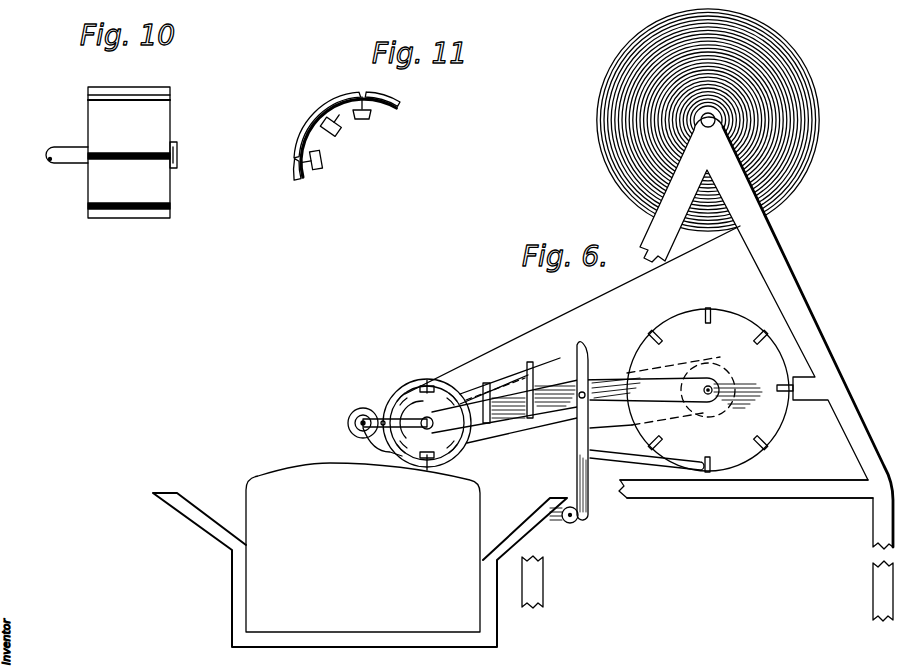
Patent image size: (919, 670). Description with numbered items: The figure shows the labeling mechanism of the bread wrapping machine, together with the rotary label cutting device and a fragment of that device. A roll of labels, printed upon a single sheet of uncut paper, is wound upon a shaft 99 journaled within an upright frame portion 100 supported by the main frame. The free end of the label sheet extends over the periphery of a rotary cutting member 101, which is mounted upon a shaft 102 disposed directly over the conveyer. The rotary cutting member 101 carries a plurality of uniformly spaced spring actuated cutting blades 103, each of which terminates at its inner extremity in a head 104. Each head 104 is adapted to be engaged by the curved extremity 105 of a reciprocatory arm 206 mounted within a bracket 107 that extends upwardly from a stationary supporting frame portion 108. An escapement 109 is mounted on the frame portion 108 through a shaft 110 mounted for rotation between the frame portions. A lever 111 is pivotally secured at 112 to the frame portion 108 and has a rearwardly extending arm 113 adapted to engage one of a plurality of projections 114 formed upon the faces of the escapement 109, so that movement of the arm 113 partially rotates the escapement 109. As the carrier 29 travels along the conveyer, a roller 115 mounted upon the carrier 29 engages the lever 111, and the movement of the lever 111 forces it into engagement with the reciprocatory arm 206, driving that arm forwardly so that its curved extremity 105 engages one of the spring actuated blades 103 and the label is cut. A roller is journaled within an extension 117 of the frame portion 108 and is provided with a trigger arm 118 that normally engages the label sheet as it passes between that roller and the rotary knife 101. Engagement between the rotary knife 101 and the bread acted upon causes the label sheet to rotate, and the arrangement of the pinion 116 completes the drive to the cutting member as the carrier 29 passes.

In FIG. 6, the carrier 29 is at (507, 522).
In FIG. 6, the shaft 99 is at (696, 123).
In FIG. 6, the upright frame portion 100 is at (780, 264).
In FIG. 10, the rotary cutting member 101 is at (176, 130).
In FIG. 11, the rotary cutting member 101 is at (303, 142).
In FIG. 6, the rotary cutting member 101 is at (410, 385).
In FIG. 10, the shaft 102 is at (63, 153).
In FIG. 6, the shaft 102 is at (424, 380).
In FIG. 10, the spring actuated cutting blades 103 is at (172, 97).
In FIG. 11, the spring actuated cutting blades 103 is at (318, 108).
In FIG. 11, the head 104 is at (338, 134).
In FIG. 6, the curved extremity 105 is at (400, 403).
In FIG. 6, the arm 206 is at (467, 390).
In FIG. 6, the bracket 107 is at (537, 376).
In FIG. 6, the stationary supporting frame portion 108 is at (607, 386).
In FIG. 6, the escapement 109 is at (716, 312).
In FIG. 6, the shaft 110 is at (710, 386).
In FIG. 6, the lever 111 is at (576, 450).
In FIG. 6, the pivot 112 is at (592, 403).
In FIG. 6, the rearwardly extending arm 113 is at (612, 453).
In FIG. 6, the projections 114 is at (745, 460).
In FIG. 6, the roller 115 is at (576, 522).
In FIG. 6, the pinion 116 is at (348, 421).
In FIG. 6, the extension 117 is at (385, 449).
In FIG. 6, the trigger arm 118 is at (390, 448).